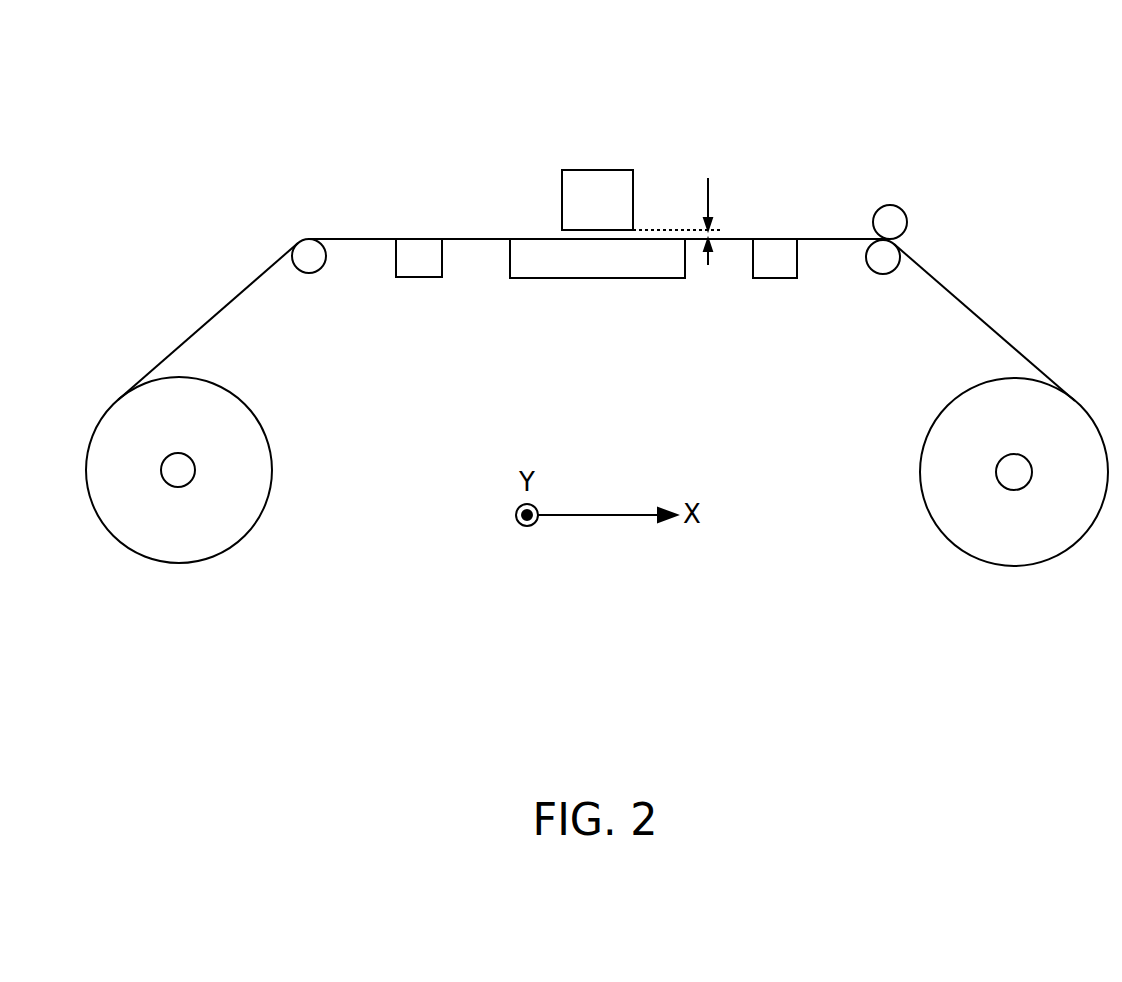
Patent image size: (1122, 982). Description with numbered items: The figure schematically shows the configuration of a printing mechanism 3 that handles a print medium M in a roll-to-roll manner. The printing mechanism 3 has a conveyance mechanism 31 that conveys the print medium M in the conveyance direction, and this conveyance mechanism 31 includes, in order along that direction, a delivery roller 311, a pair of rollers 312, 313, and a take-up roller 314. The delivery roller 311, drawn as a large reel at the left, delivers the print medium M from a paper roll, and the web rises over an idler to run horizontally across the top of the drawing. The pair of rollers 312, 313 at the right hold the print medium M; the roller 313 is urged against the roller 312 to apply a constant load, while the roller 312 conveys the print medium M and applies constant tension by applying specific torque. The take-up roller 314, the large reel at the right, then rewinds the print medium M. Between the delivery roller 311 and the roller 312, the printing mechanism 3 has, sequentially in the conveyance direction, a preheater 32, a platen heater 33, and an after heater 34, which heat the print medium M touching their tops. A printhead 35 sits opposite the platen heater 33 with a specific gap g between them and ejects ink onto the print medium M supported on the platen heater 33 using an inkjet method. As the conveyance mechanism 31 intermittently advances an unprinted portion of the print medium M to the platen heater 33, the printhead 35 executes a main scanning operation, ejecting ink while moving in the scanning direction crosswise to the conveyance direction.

The printing mechanism 3 is at (208, 98).
The print medium M is at (213, 317).
The conveyance mechanism 31 is at (587, 370).
The delivery roller 311 is at (175, 470).
The roller 312 is at (883, 262).
The roller 313 is at (895, 218).
The take-up roller 314 is at (1008, 472).
The preheater 32 is at (418, 265).
The platen heater 33 is at (605, 265).
The after heater 34 is at (770, 265).
The printhead 35 is at (600, 180).
The gap g is at (684, 221).